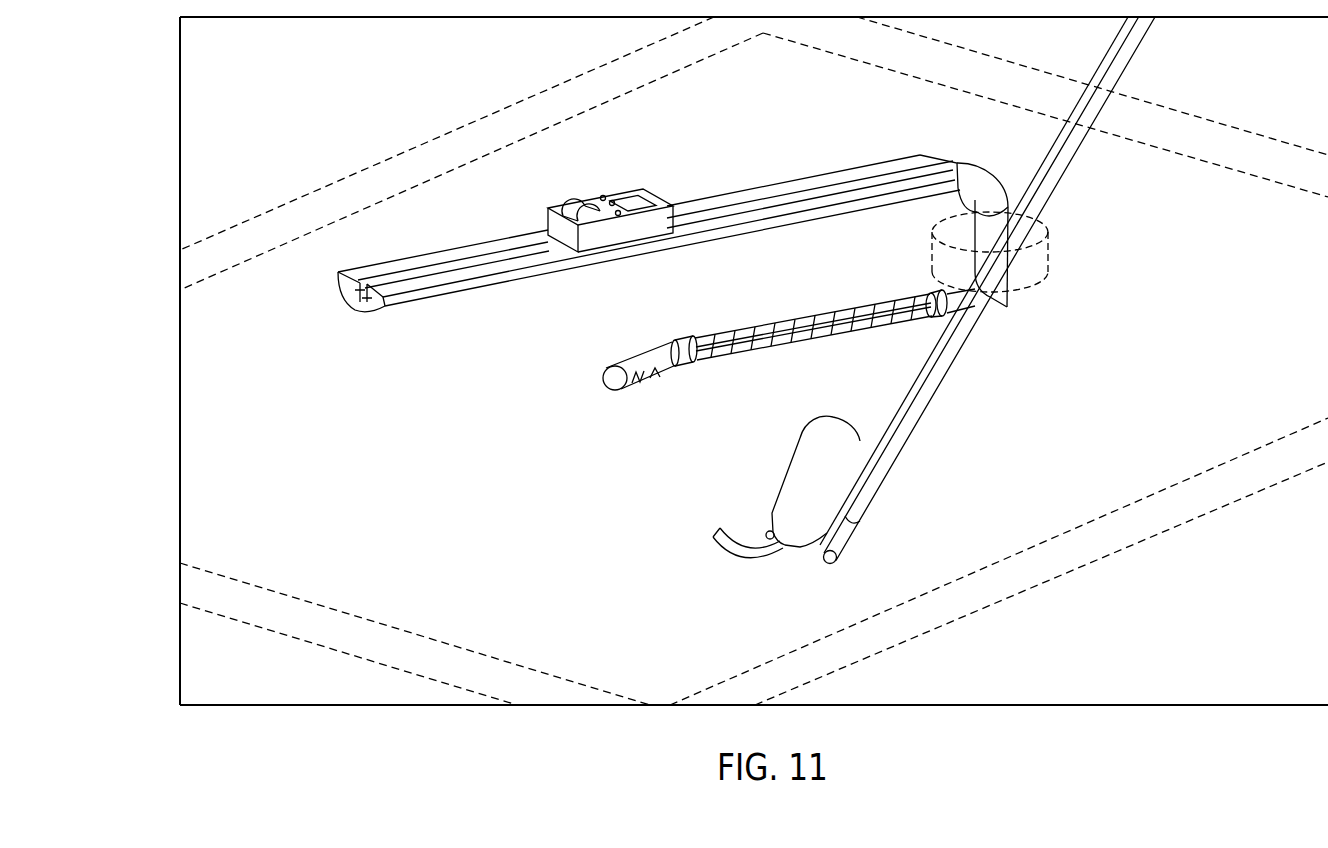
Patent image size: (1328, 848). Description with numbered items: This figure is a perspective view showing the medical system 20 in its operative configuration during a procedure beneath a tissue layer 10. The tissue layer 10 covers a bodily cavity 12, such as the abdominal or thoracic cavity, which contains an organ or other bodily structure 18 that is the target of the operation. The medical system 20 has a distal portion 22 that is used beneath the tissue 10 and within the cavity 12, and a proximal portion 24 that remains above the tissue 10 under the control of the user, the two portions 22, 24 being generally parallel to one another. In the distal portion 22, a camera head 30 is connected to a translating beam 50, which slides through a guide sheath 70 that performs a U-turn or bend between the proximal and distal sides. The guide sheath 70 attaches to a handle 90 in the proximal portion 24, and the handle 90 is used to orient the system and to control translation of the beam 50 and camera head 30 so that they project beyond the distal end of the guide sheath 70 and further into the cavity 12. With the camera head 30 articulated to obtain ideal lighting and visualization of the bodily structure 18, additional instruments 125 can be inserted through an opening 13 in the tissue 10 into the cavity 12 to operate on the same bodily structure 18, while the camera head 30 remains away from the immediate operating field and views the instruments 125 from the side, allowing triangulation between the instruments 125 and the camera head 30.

The tissue layer 10 is at (1163, 512).
The bodily cavity 12 is at (1066, 456).
The opening 13 is at (1047, 230).
The organ 18 is at (797, 460).
The medical system 20 is at (673, 225).
The distal portion 22 is at (497, 417).
The proximal portion 24 is at (435, 325).
The camera head 30 is at (654, 324).
The translating beam 50 is at (827, 286).
The guide sheath 70 is at (983, 145).
The handle 90 is at (750, 175).
The additional instruments 125 is at (1148, 38).